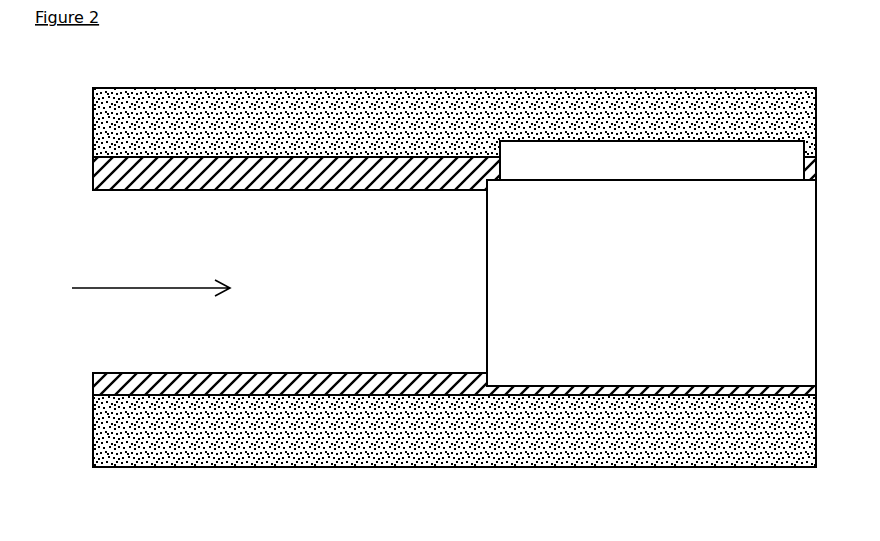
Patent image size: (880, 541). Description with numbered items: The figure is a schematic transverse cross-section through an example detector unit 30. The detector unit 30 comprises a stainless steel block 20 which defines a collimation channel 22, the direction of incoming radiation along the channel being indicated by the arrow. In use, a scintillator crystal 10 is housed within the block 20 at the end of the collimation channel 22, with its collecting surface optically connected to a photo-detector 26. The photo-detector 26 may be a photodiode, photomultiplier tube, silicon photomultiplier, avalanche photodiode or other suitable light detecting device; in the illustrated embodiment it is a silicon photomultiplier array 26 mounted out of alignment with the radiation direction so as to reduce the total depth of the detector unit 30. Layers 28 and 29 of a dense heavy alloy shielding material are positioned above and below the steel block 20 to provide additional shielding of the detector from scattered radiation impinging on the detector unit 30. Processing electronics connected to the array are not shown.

The scintillator crystal 10 is at (651, 283).
The stainless steel block 20 is at (93, 177).
The collimation channel 22 is at (229, 281).
The photo-detector 26 is at (652, 160).
The shielding layer 28 is at (582, 100).
The shielding layer 29 is at (500, 455).
The detector unit 30 is at (328, 44).